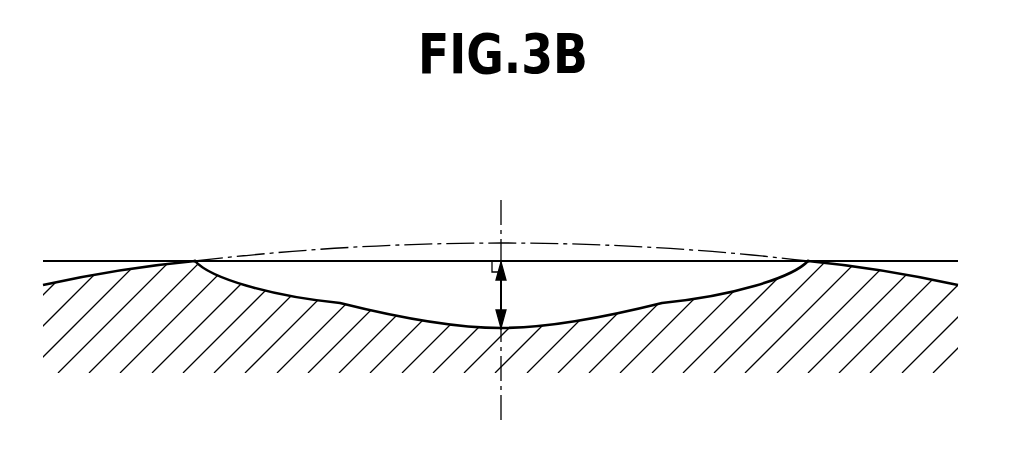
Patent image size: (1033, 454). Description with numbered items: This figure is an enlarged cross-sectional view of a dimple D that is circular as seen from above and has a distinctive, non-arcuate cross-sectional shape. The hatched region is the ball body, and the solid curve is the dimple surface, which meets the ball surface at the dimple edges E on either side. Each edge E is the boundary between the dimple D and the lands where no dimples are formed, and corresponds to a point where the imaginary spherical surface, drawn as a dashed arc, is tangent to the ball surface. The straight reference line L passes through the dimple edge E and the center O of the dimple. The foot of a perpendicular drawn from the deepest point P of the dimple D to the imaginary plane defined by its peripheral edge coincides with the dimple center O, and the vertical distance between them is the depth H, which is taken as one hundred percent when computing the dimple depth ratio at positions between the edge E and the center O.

The edge of the dimple E is at (195, 261).
The depth H is at (500, 297).
The center of the dimple O is at (502, 260).
The dimple D is at (593, 292).
The reference line L is at (912, 261).
The deepest point of the dimple P is at (501, 328).